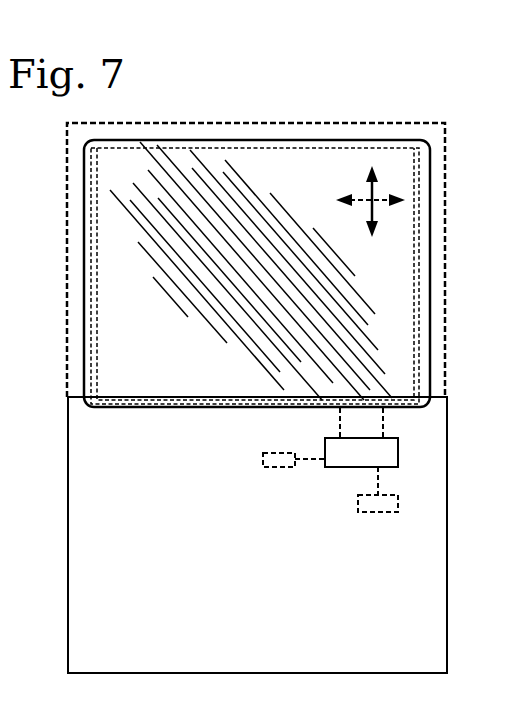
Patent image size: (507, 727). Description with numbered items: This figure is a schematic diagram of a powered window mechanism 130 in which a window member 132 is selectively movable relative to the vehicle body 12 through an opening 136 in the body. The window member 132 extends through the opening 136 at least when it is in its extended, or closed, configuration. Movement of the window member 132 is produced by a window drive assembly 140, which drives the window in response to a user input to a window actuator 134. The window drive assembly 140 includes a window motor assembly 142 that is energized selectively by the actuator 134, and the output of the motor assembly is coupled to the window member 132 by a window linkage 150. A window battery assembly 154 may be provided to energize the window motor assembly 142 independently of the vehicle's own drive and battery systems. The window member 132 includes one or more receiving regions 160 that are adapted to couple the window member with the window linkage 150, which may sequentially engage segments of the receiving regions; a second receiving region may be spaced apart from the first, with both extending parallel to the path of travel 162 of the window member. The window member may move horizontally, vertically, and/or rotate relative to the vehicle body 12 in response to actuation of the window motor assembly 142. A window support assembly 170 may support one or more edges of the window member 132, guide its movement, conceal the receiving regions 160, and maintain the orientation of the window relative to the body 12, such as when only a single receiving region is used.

The vehicle body 12 is at (450, 521).
The powered window mechanism 130 is at (255, 274).
The window member 132 is at (203, 138).
The window actuator 134 is at (280, 469).
The opening 136 is at (112, 397).
The window drive assembly 140 is at (354, 471).
The window motor assembly 142 is at (398, 452).
The window linkage 150 is at (338, 421).
The window battery assembly 154 is at (381, 514).
The receiving regions 160 is at (89, 203).
The path of travel 162 is at (371, 188).
The window support assembly 170 is at (378, 121).